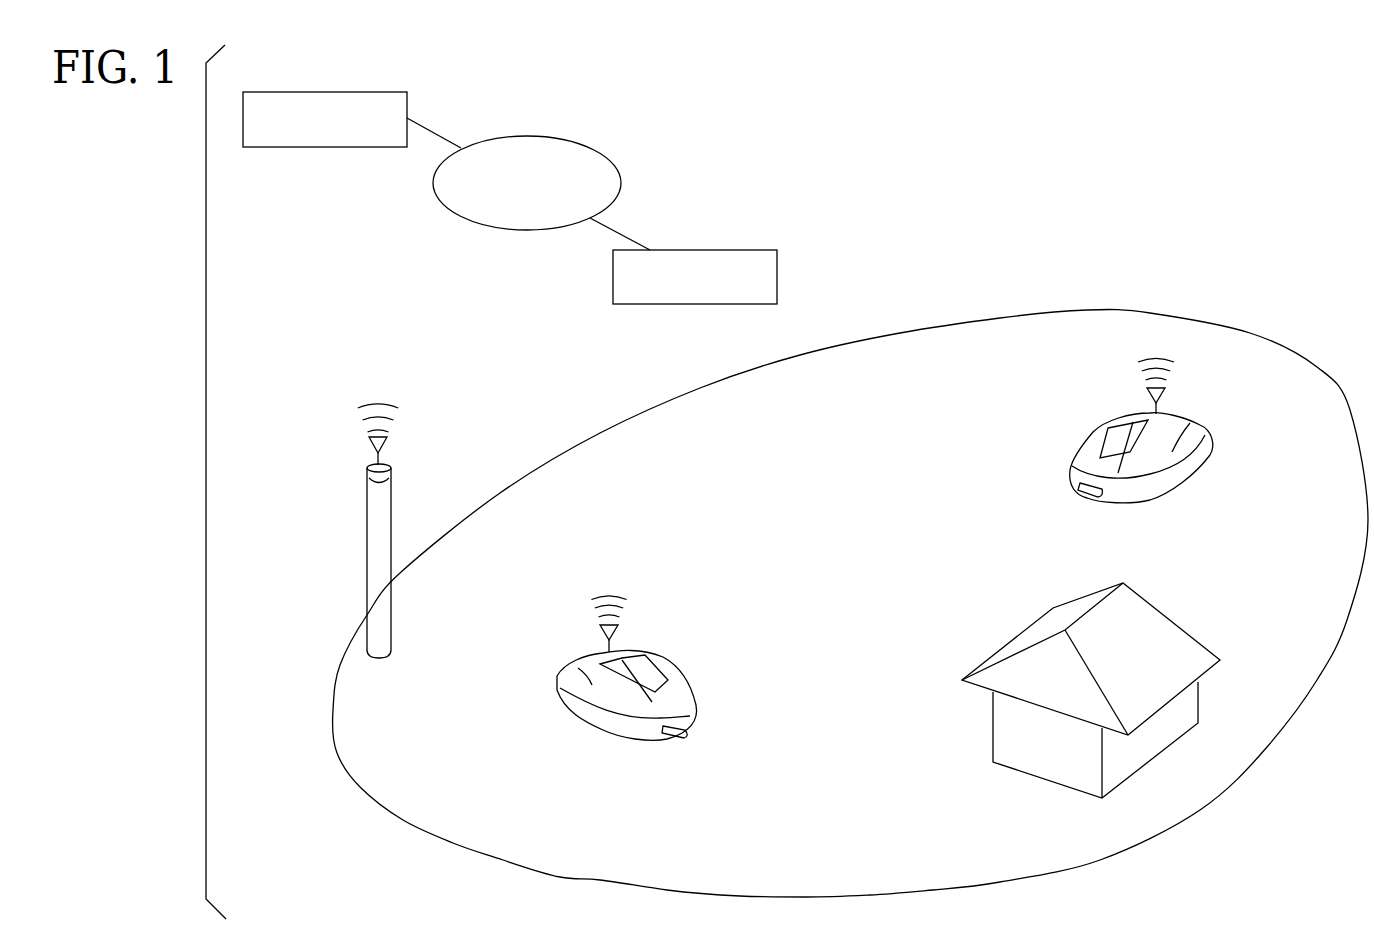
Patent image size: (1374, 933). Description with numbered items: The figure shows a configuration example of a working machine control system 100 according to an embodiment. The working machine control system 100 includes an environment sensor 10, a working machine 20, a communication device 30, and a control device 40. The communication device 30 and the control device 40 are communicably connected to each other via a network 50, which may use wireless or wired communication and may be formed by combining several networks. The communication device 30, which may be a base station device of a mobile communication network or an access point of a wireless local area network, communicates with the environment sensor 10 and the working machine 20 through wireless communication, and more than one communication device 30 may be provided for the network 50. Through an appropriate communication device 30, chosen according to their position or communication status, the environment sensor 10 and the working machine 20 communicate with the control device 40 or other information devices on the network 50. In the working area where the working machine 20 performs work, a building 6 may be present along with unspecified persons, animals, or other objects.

The working machine control system 100 is at (1205, 192).
The control device 40 is at (352, 92).
The network 50 is at (556, 139).
The communication device 30 is at (722, 251).
The environment sensor 10 is at (367, 518).
The working machine 20 is at (577, 660).
The building 6 is at (1177, 622).